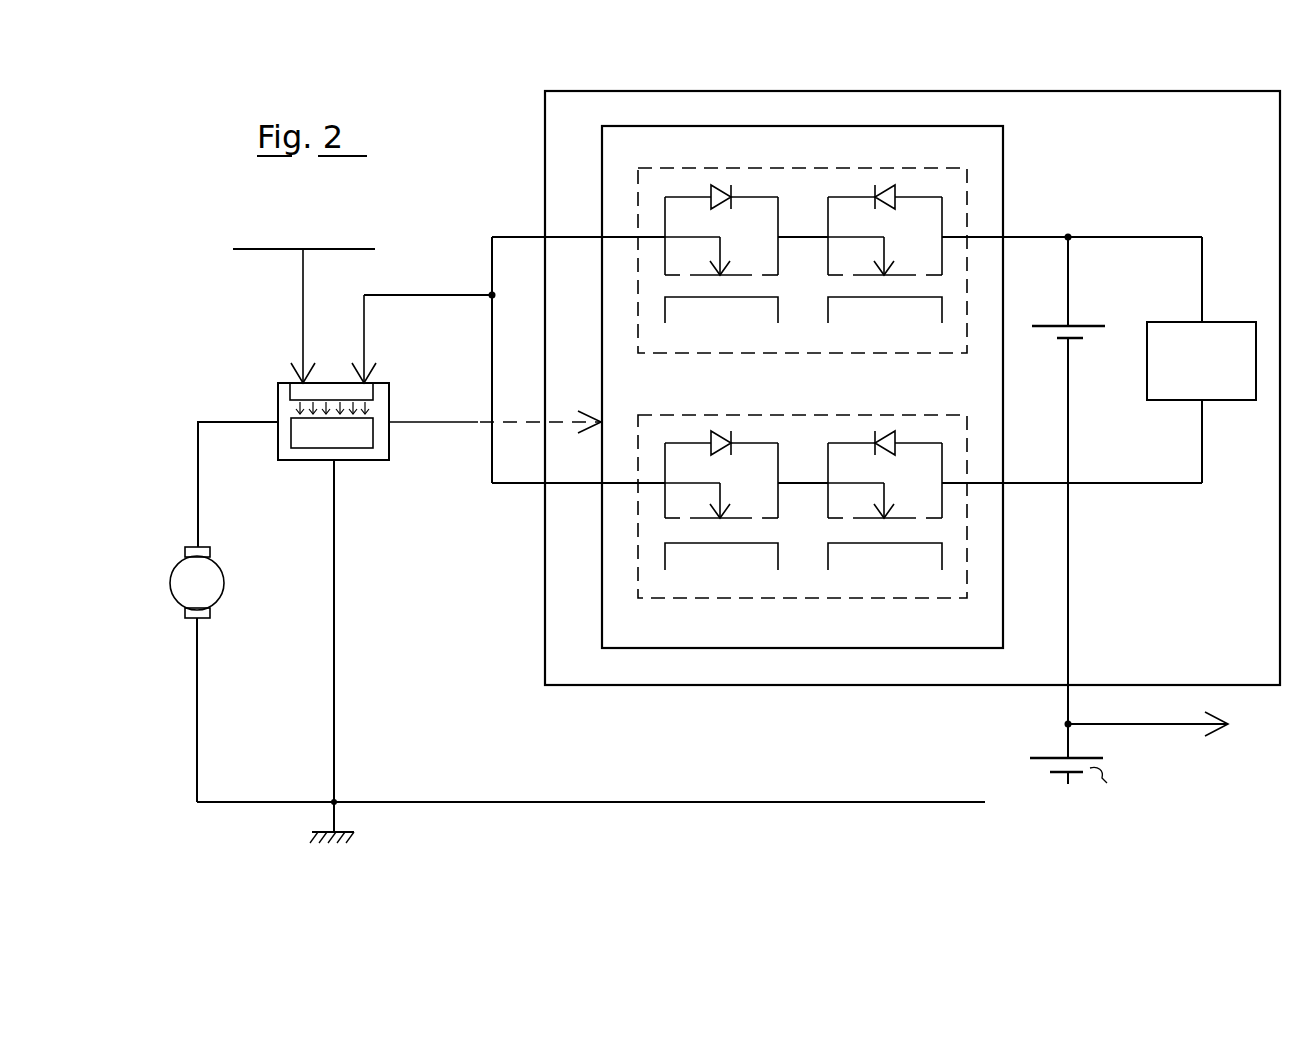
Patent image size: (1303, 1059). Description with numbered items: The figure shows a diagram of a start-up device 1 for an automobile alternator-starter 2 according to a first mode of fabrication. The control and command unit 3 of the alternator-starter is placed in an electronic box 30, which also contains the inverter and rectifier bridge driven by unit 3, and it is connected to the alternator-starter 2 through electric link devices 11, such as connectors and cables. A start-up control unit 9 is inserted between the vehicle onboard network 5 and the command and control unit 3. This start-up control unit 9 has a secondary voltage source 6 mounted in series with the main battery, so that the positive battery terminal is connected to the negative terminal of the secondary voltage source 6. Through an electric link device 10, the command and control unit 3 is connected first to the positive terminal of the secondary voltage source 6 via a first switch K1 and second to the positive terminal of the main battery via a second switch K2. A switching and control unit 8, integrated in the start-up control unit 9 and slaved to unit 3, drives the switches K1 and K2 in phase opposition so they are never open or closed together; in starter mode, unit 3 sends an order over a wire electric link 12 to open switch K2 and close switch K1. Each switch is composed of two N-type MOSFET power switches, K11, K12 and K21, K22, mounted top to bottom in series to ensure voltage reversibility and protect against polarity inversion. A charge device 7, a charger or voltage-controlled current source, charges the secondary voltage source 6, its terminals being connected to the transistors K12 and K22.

The circuit arrangement 1 is at (604, 714).
The alternator-starter 2 is at (216, 583).
The control and command unit 3 is at (294, 396).
The onboard network 5 is at (276, 249).
The secondary voltage source 6 is at (1085, 326).
The charge device 7 is at (1147, 352).
The switching and control unit 8 is at (1003, 190).
The start-up control unit 9 is at (545, 133).
The electric link device 10 is at (455, 295).
The electric link devices 11 is at (198, 476).
The wire electric link 12 is at (421, 422).
The electronic box 30 is at (324, 459).
The first switch K1 is at (765, 168).
The second switch K2 is at (758, 415).
The MOSFET power electronic switch K11 is at (710, 308).
The MOSFET power electronic switch K12 is at (916, 312).
The MOSFET power electronic switch K21 is at (690, 554).
The MOSFET power electronic switch K22 is at (916, 554).